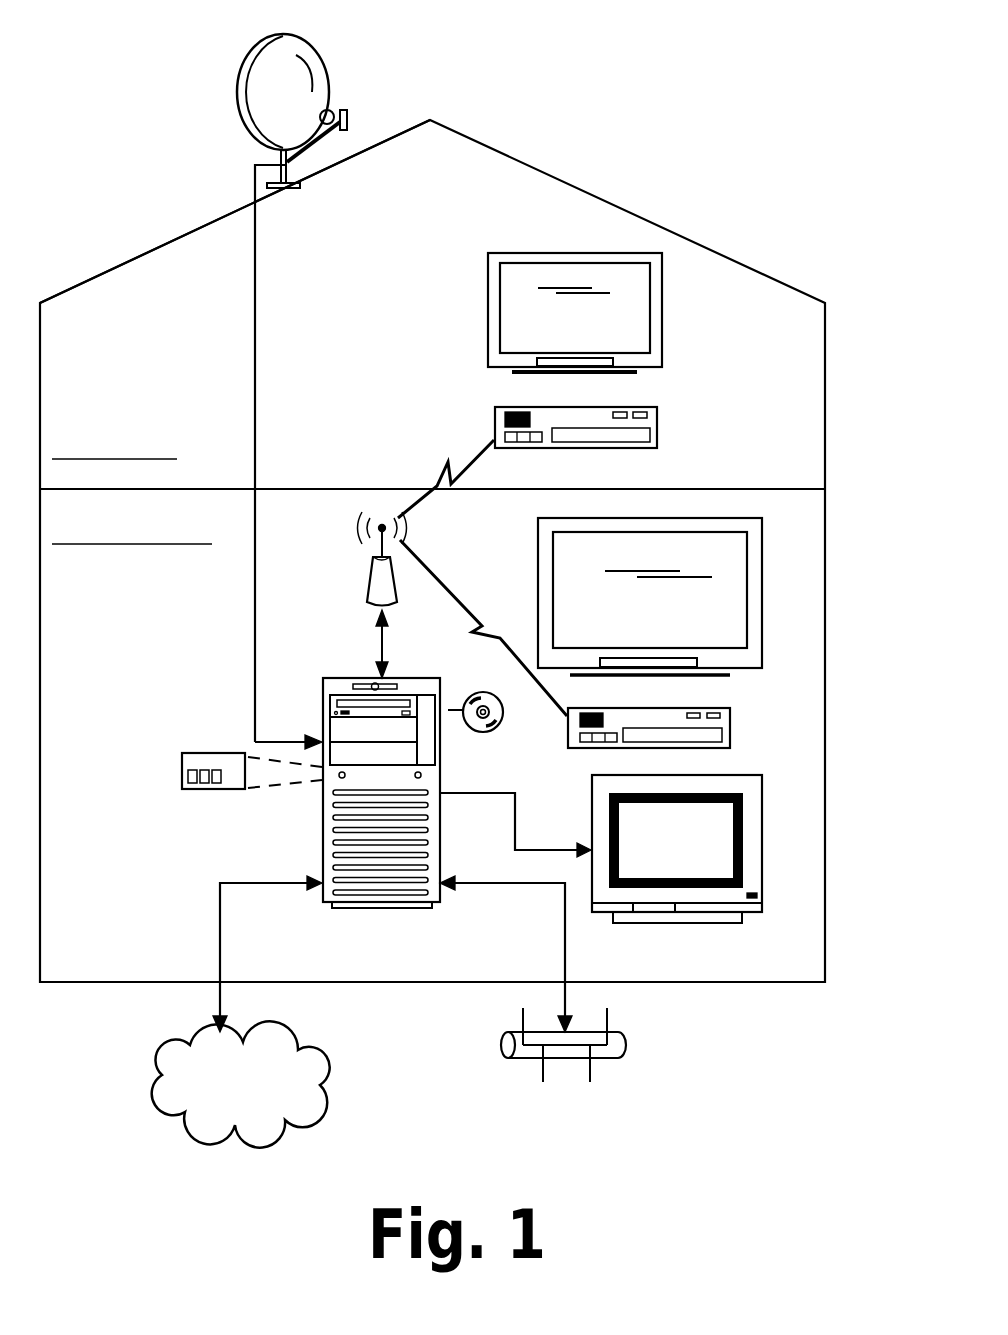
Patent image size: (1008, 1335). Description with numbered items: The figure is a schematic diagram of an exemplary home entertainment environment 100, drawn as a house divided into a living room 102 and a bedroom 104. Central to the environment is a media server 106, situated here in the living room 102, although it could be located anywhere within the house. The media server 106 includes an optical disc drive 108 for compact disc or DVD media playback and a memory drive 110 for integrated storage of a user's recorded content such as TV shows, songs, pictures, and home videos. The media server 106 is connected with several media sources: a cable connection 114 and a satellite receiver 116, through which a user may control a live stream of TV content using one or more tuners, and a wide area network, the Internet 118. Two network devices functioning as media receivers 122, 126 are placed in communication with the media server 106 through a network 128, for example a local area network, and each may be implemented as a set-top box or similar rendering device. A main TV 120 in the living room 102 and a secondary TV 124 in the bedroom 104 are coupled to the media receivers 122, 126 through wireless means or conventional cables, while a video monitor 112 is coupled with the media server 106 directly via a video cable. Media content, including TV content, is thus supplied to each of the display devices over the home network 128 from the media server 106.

The home entertainment environment 100 is at (652, 122).
The living room 102 is at (742, 982).
The bedroom 104 is at (183, 235).
The media server 106 is at (345, 678).
The optical disc drive 108 is at (483, 732).
The memory drive 110 is at (182, 770).
The video monitor 112 is at (762, 850).
The cable connection 114 is at (627, 1045).
The satellite receiver 116 is at (268, 57).
The Internet 118 is at (162, 1083).
The main TV 120 is at (762, 597).
The media receiver 122 is at (730, 730).
The secondary TV 124 is at (560, 253).
The media receiver 126 is at (657, 427).
The network 128 is at (372, 578).